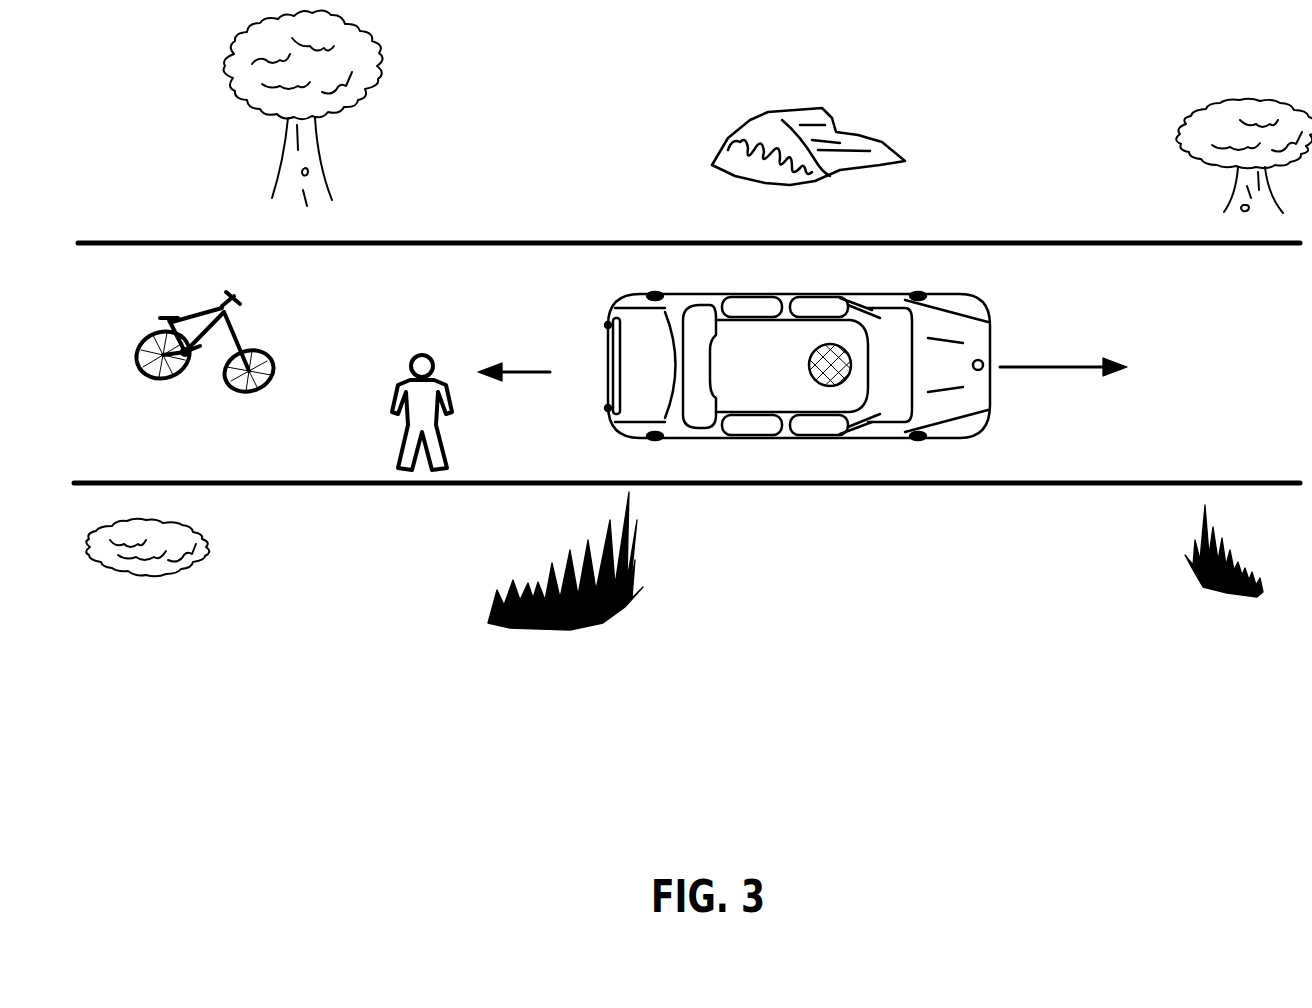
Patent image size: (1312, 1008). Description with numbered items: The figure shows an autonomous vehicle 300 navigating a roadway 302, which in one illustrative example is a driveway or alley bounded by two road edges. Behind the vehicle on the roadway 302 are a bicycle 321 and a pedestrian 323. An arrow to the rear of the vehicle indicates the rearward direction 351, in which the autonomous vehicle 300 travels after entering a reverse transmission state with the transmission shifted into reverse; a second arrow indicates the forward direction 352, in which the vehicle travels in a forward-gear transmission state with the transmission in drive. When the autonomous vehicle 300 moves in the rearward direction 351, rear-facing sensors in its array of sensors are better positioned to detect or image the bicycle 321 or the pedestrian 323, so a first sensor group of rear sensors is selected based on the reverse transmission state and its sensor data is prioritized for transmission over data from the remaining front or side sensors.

The autonomous vehicle 300 is at (607, 366).
The roadway 302 is at (189, 447).
The bicycle 321 is at (166, 318).
The pedestrian 323 is at (395, 400).
The rearward direction 351 is at (516, 371).
The forward direction 352 is at (1035, 367).